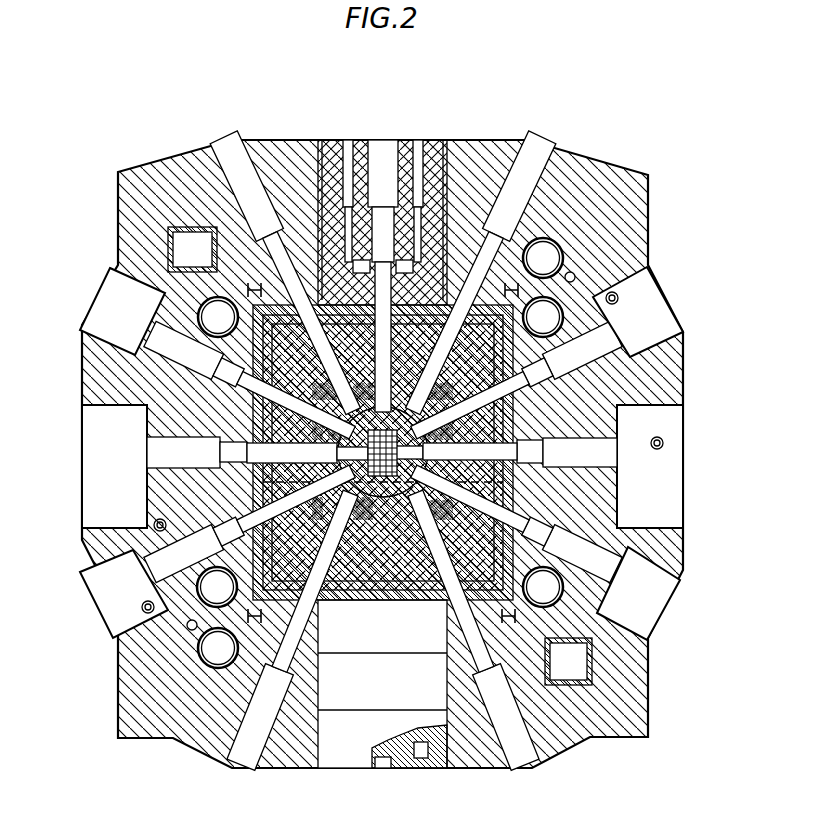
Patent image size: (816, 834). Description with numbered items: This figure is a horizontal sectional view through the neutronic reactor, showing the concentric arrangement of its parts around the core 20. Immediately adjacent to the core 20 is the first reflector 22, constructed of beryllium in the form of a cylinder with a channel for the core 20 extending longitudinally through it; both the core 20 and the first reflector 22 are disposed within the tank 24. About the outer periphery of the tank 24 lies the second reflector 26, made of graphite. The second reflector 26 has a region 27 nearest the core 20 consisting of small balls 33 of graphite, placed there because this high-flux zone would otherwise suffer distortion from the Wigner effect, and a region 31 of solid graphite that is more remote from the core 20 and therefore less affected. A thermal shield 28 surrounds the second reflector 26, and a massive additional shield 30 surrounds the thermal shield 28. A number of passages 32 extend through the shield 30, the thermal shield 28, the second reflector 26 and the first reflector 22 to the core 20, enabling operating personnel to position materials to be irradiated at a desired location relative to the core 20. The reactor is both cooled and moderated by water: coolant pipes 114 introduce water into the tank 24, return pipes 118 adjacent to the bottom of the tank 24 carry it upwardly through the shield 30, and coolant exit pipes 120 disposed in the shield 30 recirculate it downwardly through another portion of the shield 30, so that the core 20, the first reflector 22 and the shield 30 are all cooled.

The core 20 is at (383, 452).
The first reflector 22 is at (456, 452).
The tank 24 is at (401, 595).
The second reflector 26 is at (147, 419).
The region 27 is at (388, 391).
The thermal shield 28 is at (580, 452).
The shield 30 is at (625, 210).
The region 31 is at (356, 585).
The passages 32 is at (222, 146).
The balls 33 is at (373, 585).
The coolant pipes 114 is at (552, 250).
The return pipes 118 is at (548, 336).
The coolant exit pipes 120 is at (608, 602).